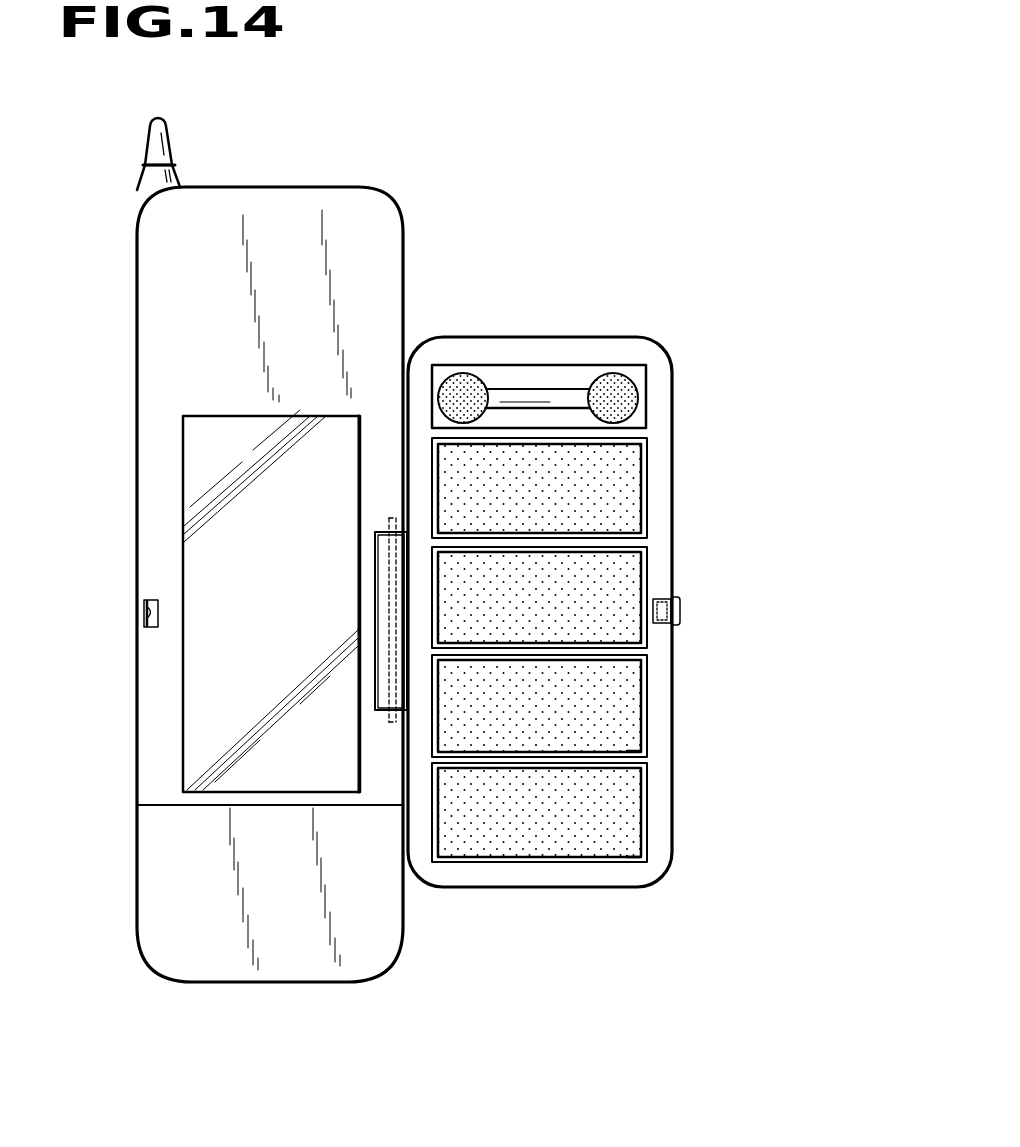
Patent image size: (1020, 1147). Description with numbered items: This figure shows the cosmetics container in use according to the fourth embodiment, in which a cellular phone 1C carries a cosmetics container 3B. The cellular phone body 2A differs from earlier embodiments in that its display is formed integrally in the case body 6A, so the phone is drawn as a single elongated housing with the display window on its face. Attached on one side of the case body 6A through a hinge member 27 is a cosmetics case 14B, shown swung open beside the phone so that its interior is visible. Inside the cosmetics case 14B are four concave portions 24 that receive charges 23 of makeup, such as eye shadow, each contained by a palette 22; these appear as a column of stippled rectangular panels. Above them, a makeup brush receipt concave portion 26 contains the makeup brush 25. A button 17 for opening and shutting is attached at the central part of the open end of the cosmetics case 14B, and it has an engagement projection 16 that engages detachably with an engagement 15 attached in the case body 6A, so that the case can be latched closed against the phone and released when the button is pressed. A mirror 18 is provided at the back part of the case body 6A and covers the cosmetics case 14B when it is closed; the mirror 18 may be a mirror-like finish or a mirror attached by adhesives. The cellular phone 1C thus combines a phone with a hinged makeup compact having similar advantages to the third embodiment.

The cellular phone 1C is at (600, 162).
The cellular phone body 2A is at (136, 324).
The case body 6A is at (150, 470).
The engagement 15 is at (140, 612).
The mirror 18 is at (205, 663).
The hinge member 27 is at (383, 704).
The cosmetics container 3B is at (679, 403).
The cosmetics case 14B is at (602, 878).
The makeup brush receipt concave portion 26 is at (504, 370).
The makeup brush 25 is at (607, 382).
The palette 22 is at (648, 498).
The charge of makeup 23 is at (622, 466).
The concave portion 24 is at (627, 752).
The engagement projection 16 is at (663, 622).
The button 17 is at (682, 608).